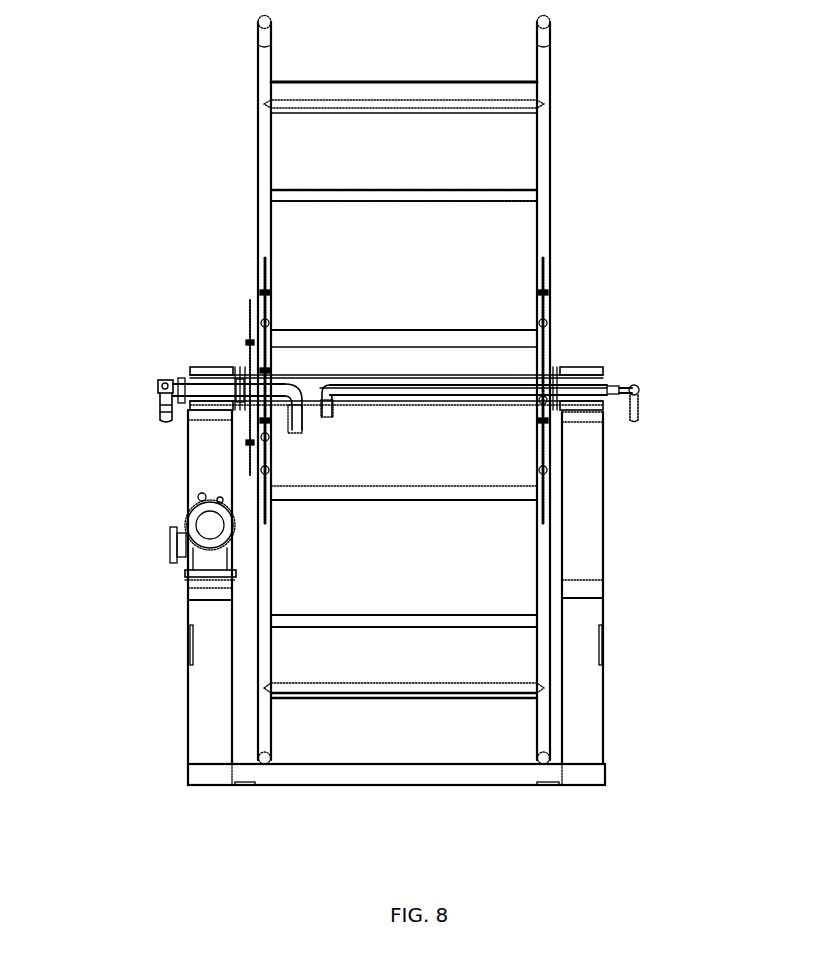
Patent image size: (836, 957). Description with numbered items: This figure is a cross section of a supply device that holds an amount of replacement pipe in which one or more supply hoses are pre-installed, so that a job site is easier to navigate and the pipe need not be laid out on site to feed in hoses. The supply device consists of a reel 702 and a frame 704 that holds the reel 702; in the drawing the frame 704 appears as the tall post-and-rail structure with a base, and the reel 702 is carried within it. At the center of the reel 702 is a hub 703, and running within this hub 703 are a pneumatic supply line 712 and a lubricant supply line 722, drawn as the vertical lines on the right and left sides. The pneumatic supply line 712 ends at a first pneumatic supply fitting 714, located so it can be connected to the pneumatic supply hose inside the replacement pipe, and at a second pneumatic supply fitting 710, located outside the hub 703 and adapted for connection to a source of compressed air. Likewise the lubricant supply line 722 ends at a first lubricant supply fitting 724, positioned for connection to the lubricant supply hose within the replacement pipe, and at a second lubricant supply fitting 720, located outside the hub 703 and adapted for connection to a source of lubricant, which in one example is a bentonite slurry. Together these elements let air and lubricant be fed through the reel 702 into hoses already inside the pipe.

The reel 702 is at (538, 197).
The hub 703 is at (410, 372).
The frame 704 is at (585, 772).
The second pneumatic supply fitting 710 is at (640, 390).
The pneumatic supply line 712 is at (545, 325).
The first pneumatic supply fitting 714 is at (333, 412).
The second lubricant supply fitting 720 is at (160, 408).
The lubricant supply line 722 is at (225, 390).
The first lubricant supply fitting 724 is at (268, 387).